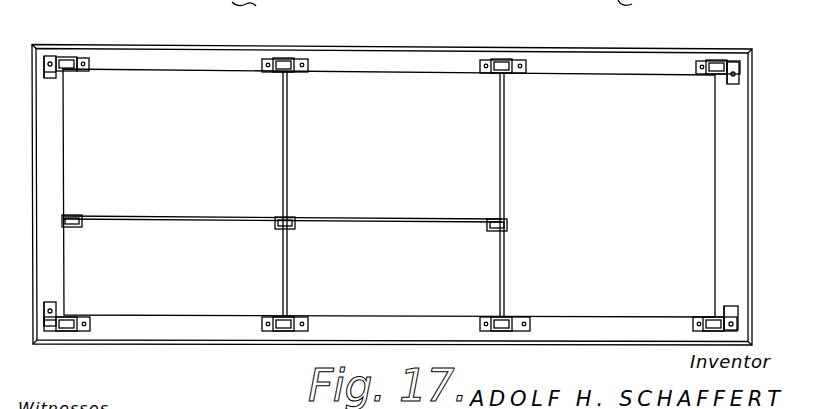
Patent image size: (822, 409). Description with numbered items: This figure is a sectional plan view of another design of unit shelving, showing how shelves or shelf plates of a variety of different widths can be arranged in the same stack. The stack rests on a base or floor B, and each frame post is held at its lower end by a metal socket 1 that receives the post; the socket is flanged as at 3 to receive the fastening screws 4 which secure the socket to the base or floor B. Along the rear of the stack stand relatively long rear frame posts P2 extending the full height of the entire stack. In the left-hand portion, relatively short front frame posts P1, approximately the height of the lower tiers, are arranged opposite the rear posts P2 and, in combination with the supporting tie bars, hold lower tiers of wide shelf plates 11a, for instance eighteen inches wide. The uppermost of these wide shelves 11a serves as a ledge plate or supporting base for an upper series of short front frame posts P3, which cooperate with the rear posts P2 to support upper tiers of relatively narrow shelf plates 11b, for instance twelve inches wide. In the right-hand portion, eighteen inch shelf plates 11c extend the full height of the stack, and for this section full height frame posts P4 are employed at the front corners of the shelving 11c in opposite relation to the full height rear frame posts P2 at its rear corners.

The base or floor B is at (396, 56).
The metal socket 1 is at (274, 59).
The flange 3 is at (89, 63).
The fastening screws 4 is at (733, 84).
The short front frame post P1 is at (62, 331).
The long rear frame post P2 is at (68, 57).
The upper front frame post P3 is at (72, 227).
The full height front frame post P4 is at (500, 331).
The wide shelf plate 11a is at (296, 278).
The narrow shelf plate 11b is at (286, 142).
The full height shelf plate 11c is at (611, 195).